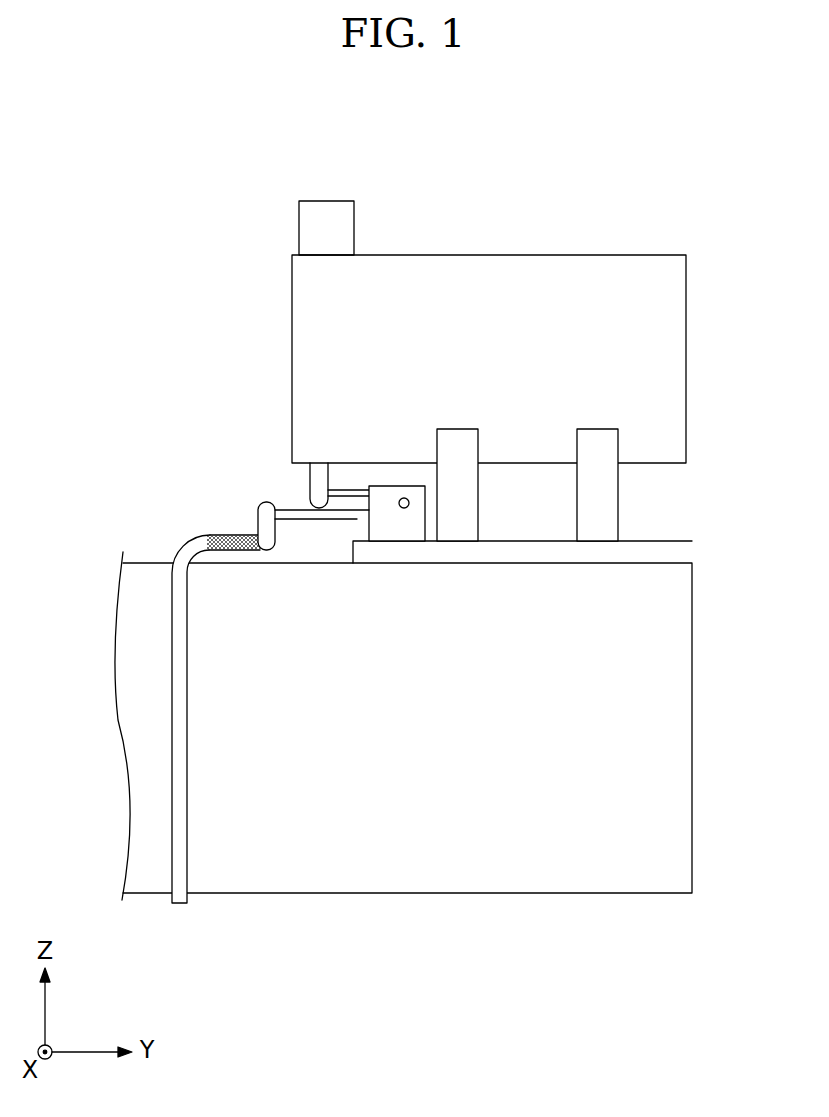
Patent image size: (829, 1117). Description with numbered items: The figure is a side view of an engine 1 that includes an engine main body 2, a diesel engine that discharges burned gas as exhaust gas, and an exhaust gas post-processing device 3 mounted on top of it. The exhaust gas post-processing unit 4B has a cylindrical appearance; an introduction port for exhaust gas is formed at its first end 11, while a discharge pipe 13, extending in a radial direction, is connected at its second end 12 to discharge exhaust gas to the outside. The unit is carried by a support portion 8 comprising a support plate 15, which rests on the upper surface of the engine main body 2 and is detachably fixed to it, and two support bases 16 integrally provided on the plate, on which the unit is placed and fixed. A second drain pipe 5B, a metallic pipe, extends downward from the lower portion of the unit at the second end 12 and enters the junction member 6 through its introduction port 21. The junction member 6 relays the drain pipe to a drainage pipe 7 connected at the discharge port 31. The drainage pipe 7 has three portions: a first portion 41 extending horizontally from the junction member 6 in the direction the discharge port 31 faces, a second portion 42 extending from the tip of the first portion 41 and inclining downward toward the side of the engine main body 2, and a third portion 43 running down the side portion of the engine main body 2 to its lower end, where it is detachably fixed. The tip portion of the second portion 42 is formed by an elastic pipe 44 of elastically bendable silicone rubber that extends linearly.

The engine 1 is at (114, 140).
The engine main body 2 is at (463, 860).
The exhaust gas post-processing device 3 is at (468, 325).
The exhaust gas post-processing unit 4B is at (587, 268).
The second drain pipe 5B is at (310, 485).
The junction member 6 is at (393, 486).
The drainage pipe 7 is at (218, 651).
The support portion 8 is at (700, 538).
The first end 11 is at (687, 254).
The second end 12 is at (293, 250).
The discharge pipe 13 is at (339, 229).
The support plate 15 is at (537, 552).
The support base 16 is at (457, 429).
The introduction port 21 is at (365, 497).
The discharge port 31 is at (357, 519).
The first portion 41 is at (317, 519).
The second portion 42 is at (258, 512).
The third portion 43 is at (172, 674).
The elastic pipe 44 is at (238, 550).